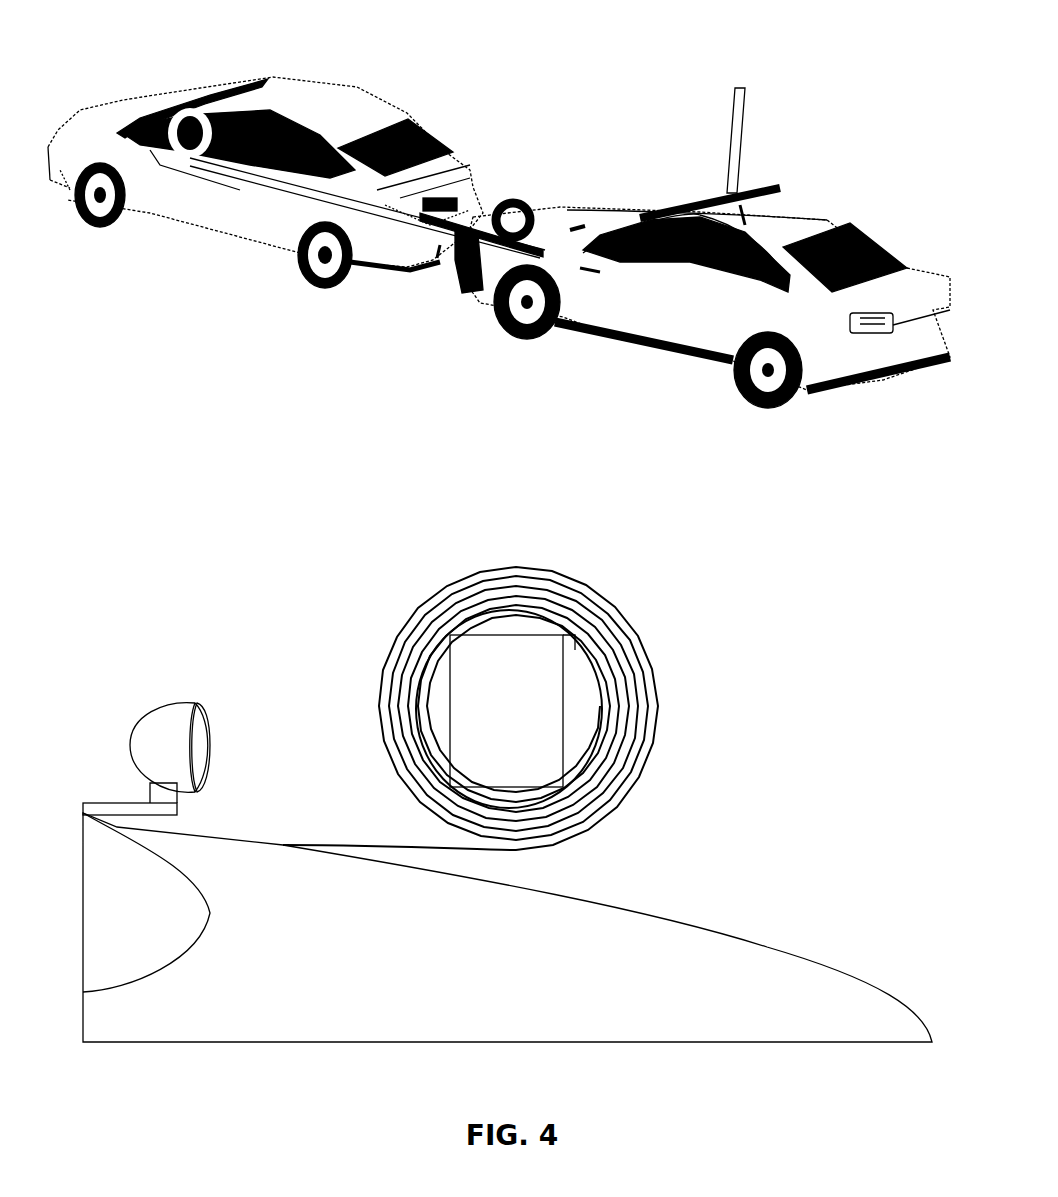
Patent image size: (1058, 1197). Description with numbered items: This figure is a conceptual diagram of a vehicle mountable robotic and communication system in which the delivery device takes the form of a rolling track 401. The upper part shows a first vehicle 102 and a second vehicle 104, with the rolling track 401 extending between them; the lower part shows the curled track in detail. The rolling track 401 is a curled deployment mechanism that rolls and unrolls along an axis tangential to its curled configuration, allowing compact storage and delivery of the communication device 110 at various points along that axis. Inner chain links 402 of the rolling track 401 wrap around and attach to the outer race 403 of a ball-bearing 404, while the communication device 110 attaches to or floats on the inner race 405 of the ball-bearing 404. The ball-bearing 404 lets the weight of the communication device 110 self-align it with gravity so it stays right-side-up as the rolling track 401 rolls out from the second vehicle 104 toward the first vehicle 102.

The first vehicle 102 is at (300, 93).
The second vehicle 104 is at (773, 223).
The rolling track 401 is at (462, 248).
The communication device 110 is at (492, 672).
The inner chain links 402 is at (417, 687).
The outer race 403 is at (600, 690).
The ball-bearing 404 is at (574, 633).
The inner race 405 is at (582, 722).